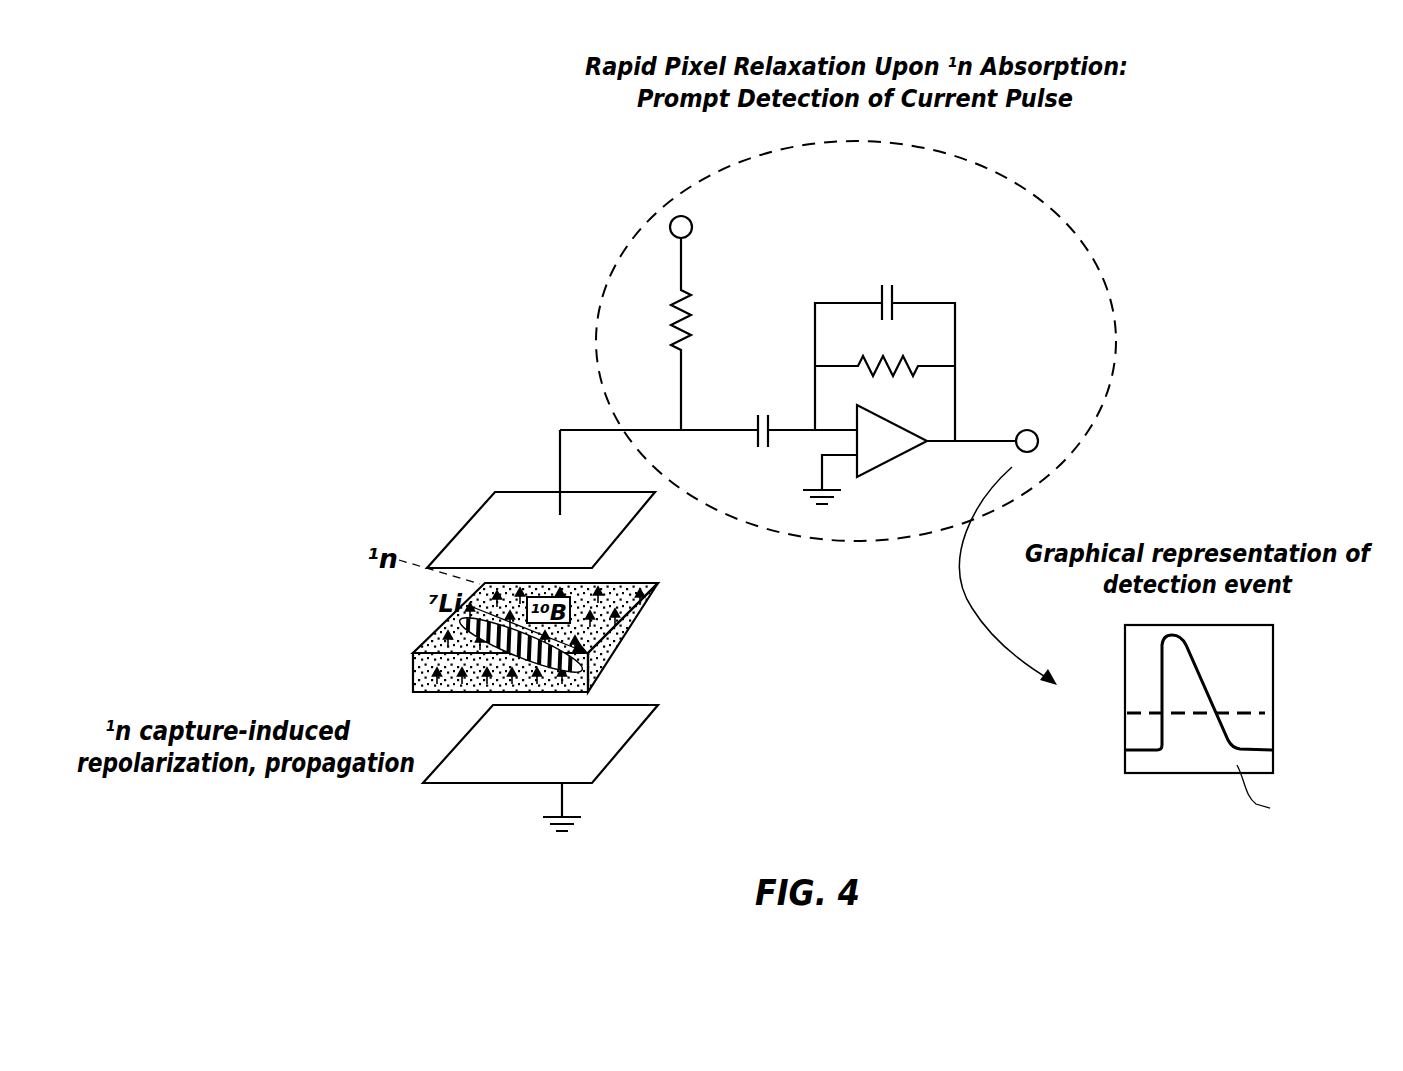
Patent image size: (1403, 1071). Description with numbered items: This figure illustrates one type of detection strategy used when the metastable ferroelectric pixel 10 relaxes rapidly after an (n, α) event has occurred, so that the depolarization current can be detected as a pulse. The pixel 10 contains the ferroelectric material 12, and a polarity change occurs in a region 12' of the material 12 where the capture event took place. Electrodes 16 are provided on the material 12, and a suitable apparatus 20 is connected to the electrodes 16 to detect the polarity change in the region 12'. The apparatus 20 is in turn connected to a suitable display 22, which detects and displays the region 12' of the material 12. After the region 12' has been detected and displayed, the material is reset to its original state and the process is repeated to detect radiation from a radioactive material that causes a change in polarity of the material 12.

The pixel 10 is at (404, 671).
The material 12 is at (580, 637).
The region 12' is at (588, 644).
The electrodes 16 is at (600, 531).
The apparatus 20 is at (1094, 226).
The display 22 is at (1252, 704).